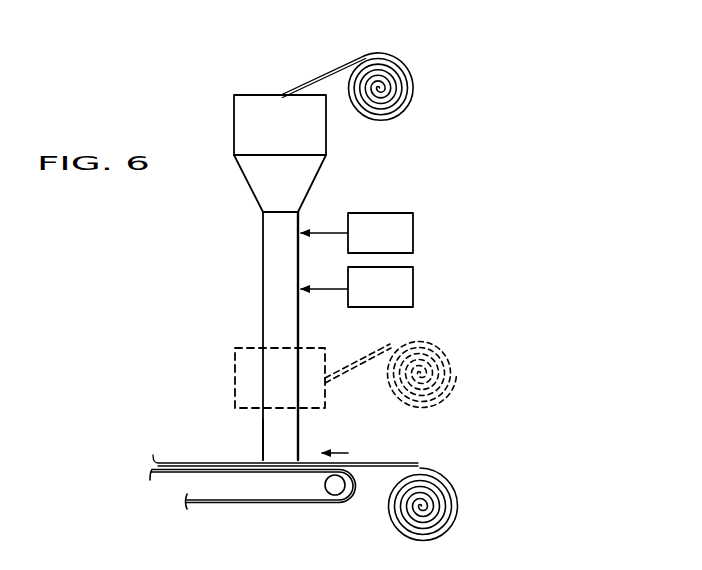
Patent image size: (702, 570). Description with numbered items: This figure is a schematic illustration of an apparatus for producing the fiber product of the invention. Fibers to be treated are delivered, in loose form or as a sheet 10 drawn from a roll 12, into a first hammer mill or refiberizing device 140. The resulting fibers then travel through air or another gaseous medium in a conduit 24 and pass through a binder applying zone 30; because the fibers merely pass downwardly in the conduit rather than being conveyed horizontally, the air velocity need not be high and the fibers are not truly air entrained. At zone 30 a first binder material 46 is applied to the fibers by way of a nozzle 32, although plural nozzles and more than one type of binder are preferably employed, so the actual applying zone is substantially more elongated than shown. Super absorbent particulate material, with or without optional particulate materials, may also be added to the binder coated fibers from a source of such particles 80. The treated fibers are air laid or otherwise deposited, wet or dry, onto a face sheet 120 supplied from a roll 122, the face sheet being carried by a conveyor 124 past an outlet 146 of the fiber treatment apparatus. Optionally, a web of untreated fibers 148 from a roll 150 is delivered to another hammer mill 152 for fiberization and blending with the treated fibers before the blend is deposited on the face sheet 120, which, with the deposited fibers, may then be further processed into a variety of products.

The sheet 10 is at (341, 66).
The roll 12 is at (414, 92).
The conduit 24 is at (246, 211).
The binder applying zone 30 is at (262, 270).
The nozzle 32 is at (302, 228).
The first binder material 46 is at (413, 233).
The source of particles 80 is at (413, 290).
The face sheet 120 is at (380, 463).
The roll 122 is at (442, 487).
The conveyor 124 is at (285, 474).
The first hammer mill or refiberizing device 140 is at (312, 136).
The outlet 146 is at (266, 458).
The web of untreated fibers 148 is at (383, 341).
The roll 150 is at (455, 355).
The hammer mill 152 is at (246, 348).